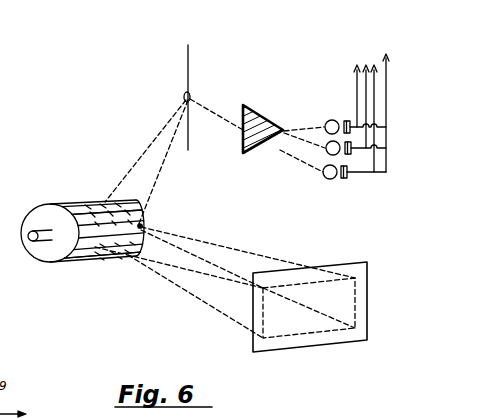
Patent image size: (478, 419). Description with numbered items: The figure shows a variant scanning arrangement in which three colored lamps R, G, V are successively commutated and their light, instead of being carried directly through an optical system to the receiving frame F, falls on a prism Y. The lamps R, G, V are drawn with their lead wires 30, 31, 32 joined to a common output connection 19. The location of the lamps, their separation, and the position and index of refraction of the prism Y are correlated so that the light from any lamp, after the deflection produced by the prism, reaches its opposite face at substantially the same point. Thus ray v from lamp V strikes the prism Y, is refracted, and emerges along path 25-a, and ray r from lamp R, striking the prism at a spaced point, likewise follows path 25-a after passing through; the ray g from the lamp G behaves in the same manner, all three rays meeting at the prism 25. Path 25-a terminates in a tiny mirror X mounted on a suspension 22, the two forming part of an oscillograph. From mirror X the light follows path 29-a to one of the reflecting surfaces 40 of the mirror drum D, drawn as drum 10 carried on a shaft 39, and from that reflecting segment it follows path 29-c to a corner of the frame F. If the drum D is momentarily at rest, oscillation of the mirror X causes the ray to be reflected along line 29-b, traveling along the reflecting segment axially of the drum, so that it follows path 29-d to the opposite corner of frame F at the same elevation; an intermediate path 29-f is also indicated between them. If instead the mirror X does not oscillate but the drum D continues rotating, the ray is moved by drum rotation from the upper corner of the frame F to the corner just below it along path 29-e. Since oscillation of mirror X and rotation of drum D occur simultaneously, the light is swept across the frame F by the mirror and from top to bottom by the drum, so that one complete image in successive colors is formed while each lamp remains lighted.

The rotating drum 10 is at (66, 202).
The output leads 19 is at (385, 54).
The suspension 22 is at (188, 60).
The dispersing prism 25 is at (259, 137).
The ray path 25-a is at (213, 113).
The ray path 29-a is at (140, 163).
The ray path 29-b is at (157, 166).
The ray path 29-c is at (190, 270).
The ray path 29-d is at (257, 258).
The ray path 29-e is at (195, 302).
The light ray 29-f is at (201, 260).
The lead from violet photocell 30 is at (357, 93).
The lead from green photocell 31 is at (368, 115).
The lead from red photocell 32 is at (373, 175).
The drum shaft 39 is at (33, 242).
The reflecting surfaces 40 is at (88, 259).
The mirror drum D is at (45, 255).
The tiny mirror X is at (184, 94).
The prism Y is at (254, 118).
The lamp V is at (329, 120).
The lamp G is at (328, 142).
The lamp R is at (326, 166).
The ray v is at (305, 128).
The green ray g is at (301, 140).
The ray r is at (292, 164).
The receiving frame F is at (362, 262).